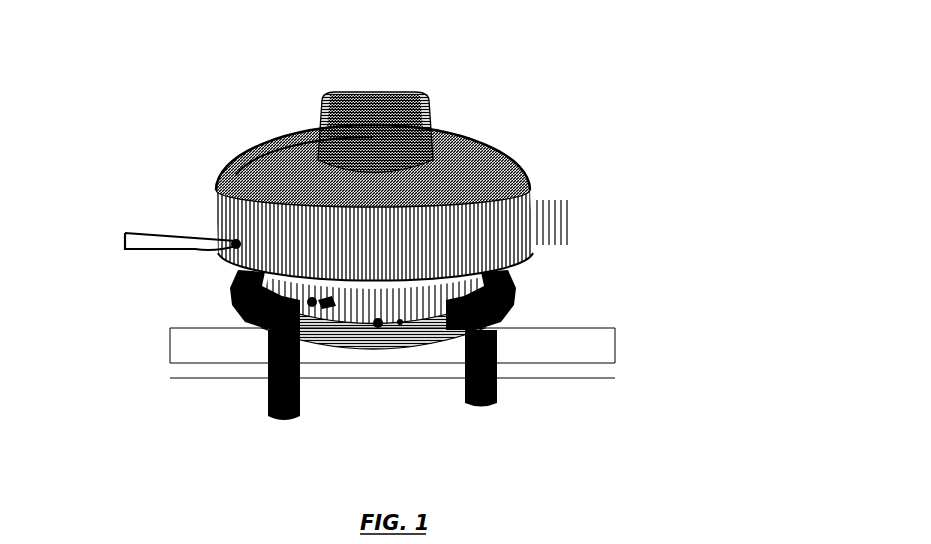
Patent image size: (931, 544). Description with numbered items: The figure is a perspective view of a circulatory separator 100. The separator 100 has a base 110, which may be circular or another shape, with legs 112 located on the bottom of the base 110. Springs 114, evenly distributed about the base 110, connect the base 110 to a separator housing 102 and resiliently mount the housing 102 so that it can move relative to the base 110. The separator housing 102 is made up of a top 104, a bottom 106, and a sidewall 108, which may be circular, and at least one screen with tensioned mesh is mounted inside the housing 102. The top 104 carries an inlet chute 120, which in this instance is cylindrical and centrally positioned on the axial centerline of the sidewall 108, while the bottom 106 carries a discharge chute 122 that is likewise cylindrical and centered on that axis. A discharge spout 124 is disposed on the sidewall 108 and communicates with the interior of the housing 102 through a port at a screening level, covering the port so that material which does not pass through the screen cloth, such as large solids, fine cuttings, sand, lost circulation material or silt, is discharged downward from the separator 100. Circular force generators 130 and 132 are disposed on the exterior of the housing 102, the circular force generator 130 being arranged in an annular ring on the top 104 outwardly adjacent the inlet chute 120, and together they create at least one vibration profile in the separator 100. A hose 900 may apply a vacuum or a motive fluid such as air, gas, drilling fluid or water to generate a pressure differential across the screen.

The separator 100 is at (592, 56).
The separator housing 102 is at (533, 146).
The top 104 is at (249, 160).
The bottom 106 is at (512, 270).
The sidewall 108 is at (212, 206).
The base 110 is at (516, 312).
The legs 112 is at (268, 395).
The springs 114 is at (312, 302).
The inlet chute 120 is at (360, 98).
The discharge chute 122 is at (378, 325).
The discharge spout 124 is at (556, 233).
The circular force generator 130 is at (432, 98).
The circular force generator 132 is at (400, 325).
The hose 900 is at (110, 242).